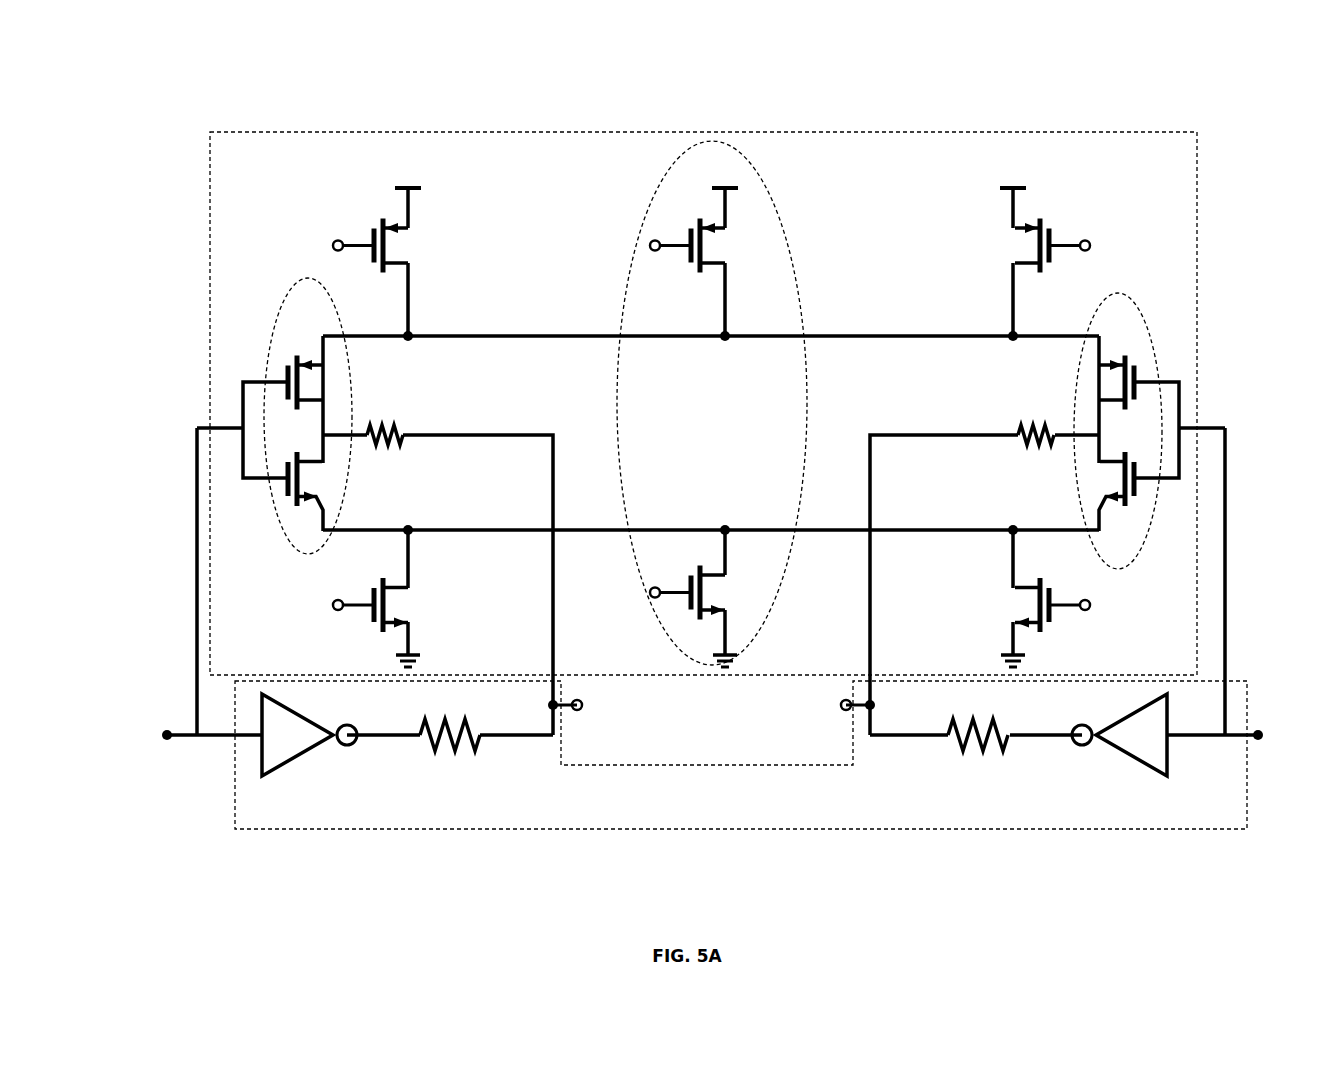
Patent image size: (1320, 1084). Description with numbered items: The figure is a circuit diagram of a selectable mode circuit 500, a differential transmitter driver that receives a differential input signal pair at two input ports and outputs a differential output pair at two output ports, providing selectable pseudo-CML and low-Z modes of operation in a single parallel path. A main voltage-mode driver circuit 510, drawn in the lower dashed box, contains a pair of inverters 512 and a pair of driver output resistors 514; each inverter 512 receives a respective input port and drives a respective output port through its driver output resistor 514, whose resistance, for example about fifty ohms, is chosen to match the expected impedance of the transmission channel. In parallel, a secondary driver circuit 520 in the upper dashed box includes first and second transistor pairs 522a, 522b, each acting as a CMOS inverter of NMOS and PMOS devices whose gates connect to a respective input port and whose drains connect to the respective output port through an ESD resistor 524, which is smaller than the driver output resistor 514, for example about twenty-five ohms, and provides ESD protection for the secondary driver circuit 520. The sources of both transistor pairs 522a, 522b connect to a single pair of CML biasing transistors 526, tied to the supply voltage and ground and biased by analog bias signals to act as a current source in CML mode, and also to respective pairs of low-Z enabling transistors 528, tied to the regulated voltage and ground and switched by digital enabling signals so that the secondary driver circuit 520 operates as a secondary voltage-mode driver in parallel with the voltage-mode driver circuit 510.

The selectable mode circuit 500 is at (188, 98).
The voltage-mode driver circuit 510 is at (362, 832).
The inverter 512 is at (330, 745).
The driver output resistor 514 is at (425, 757).
The secondary driver circuit 520 is at (377, 130).
The first transistor pair 522a is at (278, 315).
The second transistor pair 522b is at (1133, 302).
The ESD resistor 524 is at (396, 446).
The CML biasing transistors 526 is at (783, 215).
The low-Z enabling transistors 528 is at (430, 588).